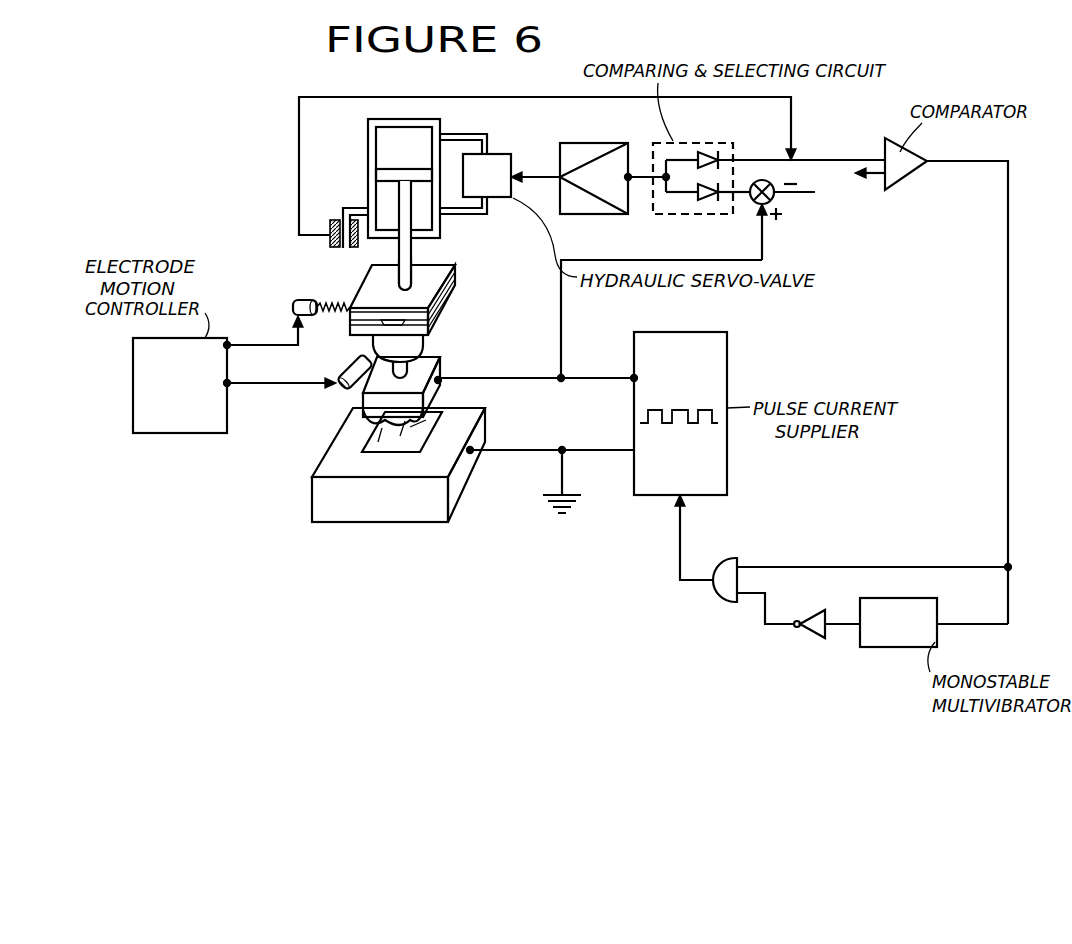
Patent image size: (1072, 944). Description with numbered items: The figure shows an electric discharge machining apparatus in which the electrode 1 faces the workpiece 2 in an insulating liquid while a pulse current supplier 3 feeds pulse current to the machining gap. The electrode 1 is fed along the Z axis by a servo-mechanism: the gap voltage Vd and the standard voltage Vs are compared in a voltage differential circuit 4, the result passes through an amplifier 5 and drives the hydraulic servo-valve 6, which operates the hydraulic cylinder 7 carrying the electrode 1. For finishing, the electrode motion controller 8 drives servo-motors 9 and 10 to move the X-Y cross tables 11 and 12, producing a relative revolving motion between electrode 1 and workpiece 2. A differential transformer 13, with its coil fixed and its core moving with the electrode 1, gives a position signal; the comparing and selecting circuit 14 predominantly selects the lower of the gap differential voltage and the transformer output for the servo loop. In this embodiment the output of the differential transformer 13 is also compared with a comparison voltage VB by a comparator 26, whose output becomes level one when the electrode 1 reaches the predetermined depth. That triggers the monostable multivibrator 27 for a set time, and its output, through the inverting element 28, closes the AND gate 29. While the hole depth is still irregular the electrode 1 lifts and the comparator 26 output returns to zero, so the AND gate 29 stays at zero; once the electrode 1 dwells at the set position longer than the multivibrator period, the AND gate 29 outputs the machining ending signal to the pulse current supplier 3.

The electrode 1 is at (442, 378).
The workpiece 2 is at (478, 440).
The pulse current supplier 3 is at (705, 362).
The voltage differential circuit 4 is at (752, 200).
The amplifier 5 is at (579, 155).
The hydraulic servo-valve 6 is at (493, 162).
The hydraulic cylinder 7 is at (413, 140).
The electrode motion controller 8 is at (175, 413).
The servo-motor 9 is at (300, 300).
The servo-motor 10 is at (340, 390).
The X-Y cross table 11 is at (455, 290).
The X-Y cross table 12 is at (458, 302).
The differential transformer 13 is at (333, 222).
The comparing and selecting circuit 14 is at (683, 213).
The comparator 26 is at (900, 175).
The monostable multivibrator 27 is at (890, 647).
The inverting element 28 is at (808, 630).
The AND gate 29 is at (725, 585).